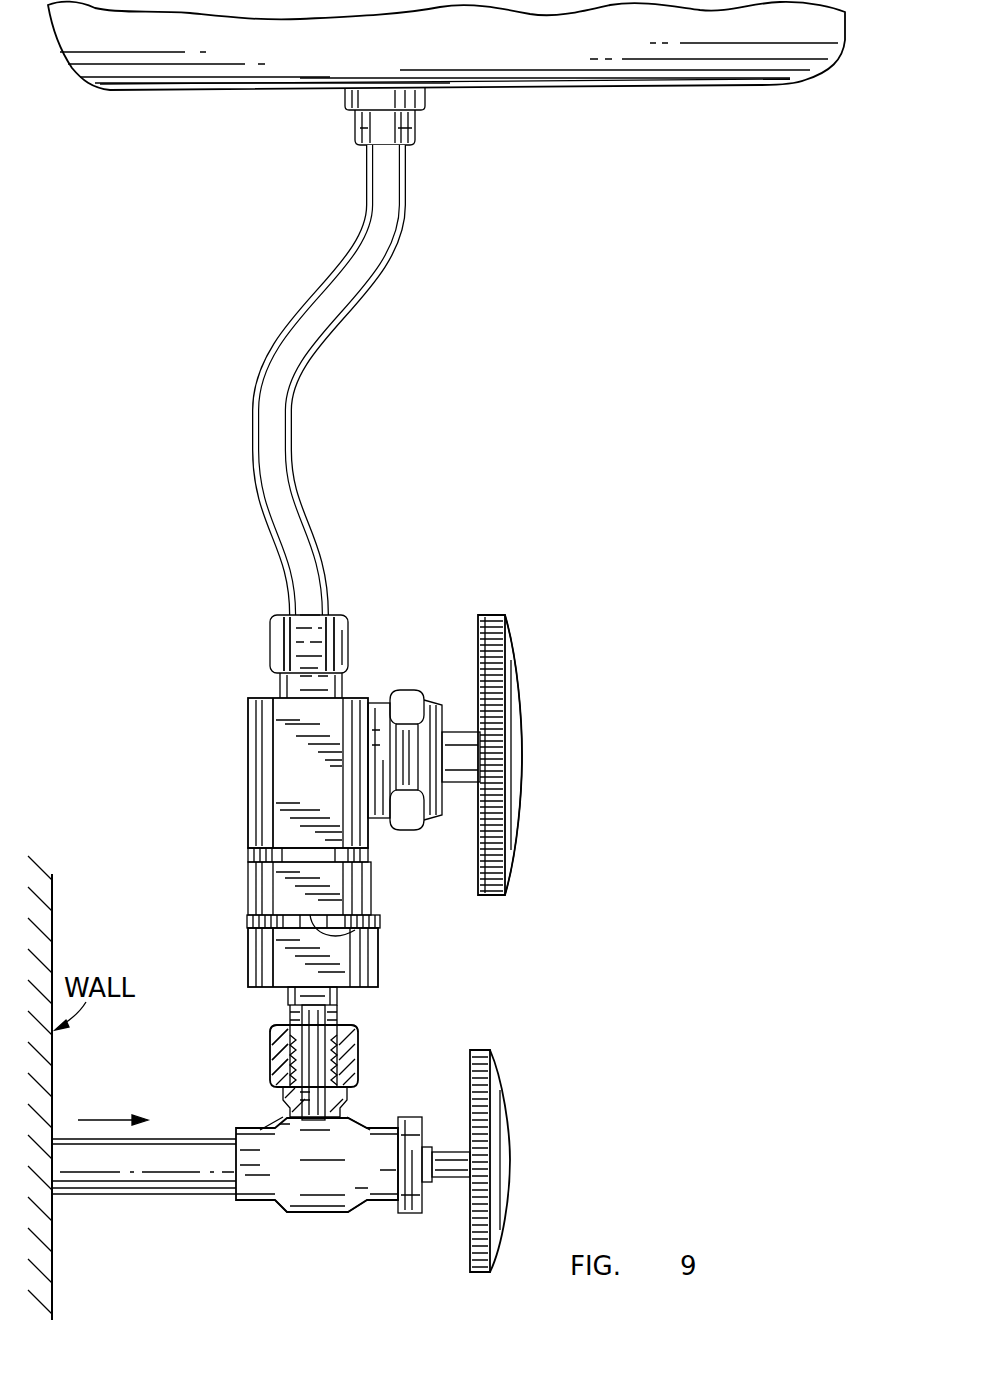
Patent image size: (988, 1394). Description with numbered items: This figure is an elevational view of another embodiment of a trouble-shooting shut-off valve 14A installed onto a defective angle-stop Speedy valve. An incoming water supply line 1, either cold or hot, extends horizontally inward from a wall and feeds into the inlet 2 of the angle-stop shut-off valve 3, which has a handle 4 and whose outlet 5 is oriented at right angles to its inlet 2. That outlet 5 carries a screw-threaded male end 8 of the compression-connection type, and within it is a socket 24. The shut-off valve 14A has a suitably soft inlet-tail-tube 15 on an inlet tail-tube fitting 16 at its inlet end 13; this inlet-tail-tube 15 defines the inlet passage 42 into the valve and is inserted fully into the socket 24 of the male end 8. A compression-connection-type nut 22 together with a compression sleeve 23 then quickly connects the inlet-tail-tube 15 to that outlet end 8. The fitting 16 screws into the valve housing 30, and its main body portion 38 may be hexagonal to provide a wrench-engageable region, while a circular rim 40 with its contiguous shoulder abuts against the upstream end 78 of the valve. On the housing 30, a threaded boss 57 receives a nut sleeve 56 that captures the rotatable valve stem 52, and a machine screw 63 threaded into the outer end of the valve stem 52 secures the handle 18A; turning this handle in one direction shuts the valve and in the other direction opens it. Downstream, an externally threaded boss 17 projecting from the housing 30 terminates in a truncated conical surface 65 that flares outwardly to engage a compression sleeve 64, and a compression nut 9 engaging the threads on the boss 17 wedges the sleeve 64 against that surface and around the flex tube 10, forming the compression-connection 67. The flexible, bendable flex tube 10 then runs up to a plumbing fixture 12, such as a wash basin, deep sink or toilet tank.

The plumbing fixture 12 is at (620, 86).
The flex tube line 10 is at (290, 437).
The compression nut 9 is at (272, 643).
The truncated conical surface 65 is at (302, 617).
The compression sleeve 64 is at (348, 622).
The compression-connection 67 is at (344, 604).
The externally threaded boss 17 is at (346, 660).
The valve housing 30 is at (278, 712).
The trouble-shooting shut-off valve 14A is at (248, 766).
The threaded boss 57 is at (383, 703).
The nut sleeve 56 is at (410, 690).
The valve stem 52 is at (461, 784).
The handle 18A is at (520, 697).
The machine screw 63 is at (520, 755).
The circular rim 40 is at (250, 921).
The upstream end 78 is at (352, 929).
The main body portion 38 is at (290, 960).
The inlet tail-tube fitting 16 is at (378, 967).
The inlet end 13 is at (290, 990).
The inlet passage 42 is at (330, 1015).
The compression-connection-type nut 22 is at (275, 1032).
The compression sleeve 23 is at (358, 1040).
The inlet-tail-tube 15 is at (280, 1062).
The screw-threaded male end 8 is at (352, 1070).
The socket 24 is at (285, 1098).
The outlet 5 is at (345, 1122).
The handle 4 is at (500, 1112).
The angle-stop shut-off valve 3 is at (322, 1214).
The inlet 2 is at (248, 1175).
The water supply line 1 is at (146, 1180).